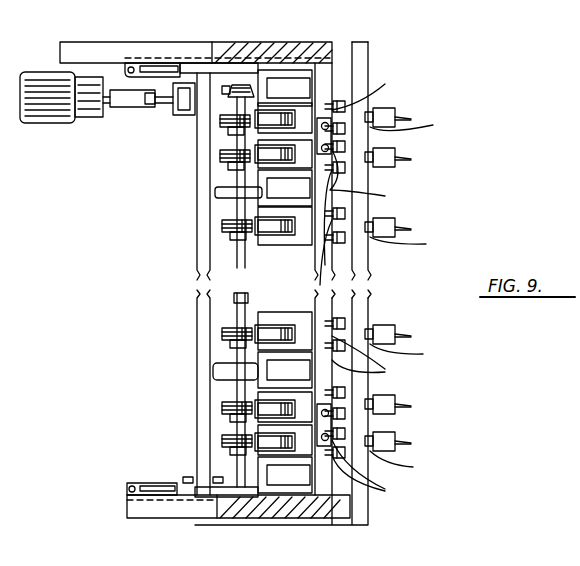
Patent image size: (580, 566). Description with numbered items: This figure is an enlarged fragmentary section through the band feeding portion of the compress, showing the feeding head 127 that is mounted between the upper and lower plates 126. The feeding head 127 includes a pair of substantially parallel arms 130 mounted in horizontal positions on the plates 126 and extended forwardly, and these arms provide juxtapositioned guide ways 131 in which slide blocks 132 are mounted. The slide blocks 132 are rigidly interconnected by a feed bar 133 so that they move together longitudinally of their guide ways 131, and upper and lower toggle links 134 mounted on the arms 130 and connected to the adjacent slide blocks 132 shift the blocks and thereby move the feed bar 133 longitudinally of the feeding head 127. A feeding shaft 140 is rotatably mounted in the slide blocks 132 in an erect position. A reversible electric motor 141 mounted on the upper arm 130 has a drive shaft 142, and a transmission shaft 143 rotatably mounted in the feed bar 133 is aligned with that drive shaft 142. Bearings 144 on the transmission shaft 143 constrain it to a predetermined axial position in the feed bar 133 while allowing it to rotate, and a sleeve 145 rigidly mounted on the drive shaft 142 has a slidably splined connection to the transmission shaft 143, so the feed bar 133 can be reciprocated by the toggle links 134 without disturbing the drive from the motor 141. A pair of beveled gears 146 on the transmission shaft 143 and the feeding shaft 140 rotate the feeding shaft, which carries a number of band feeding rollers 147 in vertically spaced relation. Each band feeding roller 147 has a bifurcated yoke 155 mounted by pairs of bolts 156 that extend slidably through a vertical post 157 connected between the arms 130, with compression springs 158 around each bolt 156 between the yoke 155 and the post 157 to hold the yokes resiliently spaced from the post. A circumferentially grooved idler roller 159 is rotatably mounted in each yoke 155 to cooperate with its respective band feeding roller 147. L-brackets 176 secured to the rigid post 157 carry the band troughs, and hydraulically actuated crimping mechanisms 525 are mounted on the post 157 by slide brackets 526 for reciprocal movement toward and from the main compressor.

The upper and lower plates 126 is at (215, 55).
The feeding head 127 is at (352, 82).
The arms 130 is at (122, 52).
The guide ways 131 is at (168, 56).
The slide blocks 132 is at (231, 68).
The feed bar 133 is at (197, 303).
The toggle links 134 is at (148, 72).
The feeding shaft 140 is at (237, 347).
The reversible electric motor 141 is at (38, 118).
The drive shaft 142 is at (105, 112).
The transmission shaft 143 is at (160, 107).
The bearings 144 is at (186, 115).
The sleeve 145 is at (125, 93).
The beveled gears 146 is at (230, 88).
The band feeding rollers 147 is at (220, 156).
The bifurcated yoke 155 is at (296, 103).
The bolts 156 is at (369, 284).
The vertical post 157 is at (325, 264).
The compression springs 158 is at (347, 106).
The idler roller 159 is at (275, 117).
The L-brackets 176 is at (332, 140).
The crimping mechanisms 525 is at (395, 112).
The slide brackets 526 is at (419, 295).